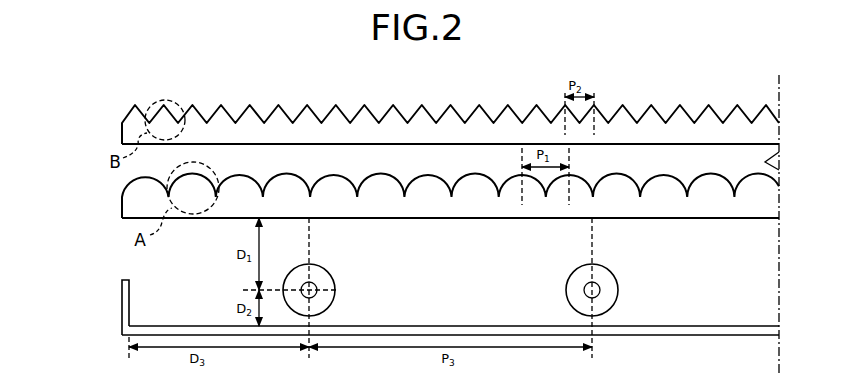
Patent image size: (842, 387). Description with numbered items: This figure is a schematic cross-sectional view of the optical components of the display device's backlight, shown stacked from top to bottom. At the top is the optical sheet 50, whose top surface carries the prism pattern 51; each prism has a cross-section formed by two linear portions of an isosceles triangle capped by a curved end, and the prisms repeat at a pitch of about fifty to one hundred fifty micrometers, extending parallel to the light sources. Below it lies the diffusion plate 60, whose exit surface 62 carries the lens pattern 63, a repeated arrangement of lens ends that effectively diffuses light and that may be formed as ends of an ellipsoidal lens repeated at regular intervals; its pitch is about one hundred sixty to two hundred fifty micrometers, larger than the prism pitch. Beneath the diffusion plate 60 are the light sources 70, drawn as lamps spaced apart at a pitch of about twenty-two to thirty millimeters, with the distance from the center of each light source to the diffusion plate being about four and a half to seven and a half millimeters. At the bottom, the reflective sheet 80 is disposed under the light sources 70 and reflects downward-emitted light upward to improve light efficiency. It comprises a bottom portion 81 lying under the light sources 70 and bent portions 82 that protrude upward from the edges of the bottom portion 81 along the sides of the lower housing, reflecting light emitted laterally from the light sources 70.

The optical sheet 50 is at (796, 105).
The prism pattern 51 is at (133, 118).
The diffusion plate 60 is at (796, 147).
The exit surface 62 is at (102, 168).
The lens pattern 63 is at (137, 192).
The light sources 70 is at (608, 295).
The reflective sheet 80 is at (407, 317).
The bottom portion 81 is at (122, 333).
The bent portions 82 is at (126, 312).